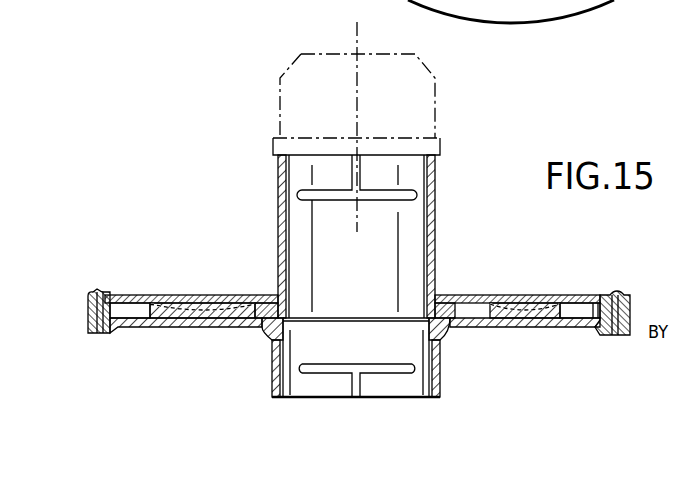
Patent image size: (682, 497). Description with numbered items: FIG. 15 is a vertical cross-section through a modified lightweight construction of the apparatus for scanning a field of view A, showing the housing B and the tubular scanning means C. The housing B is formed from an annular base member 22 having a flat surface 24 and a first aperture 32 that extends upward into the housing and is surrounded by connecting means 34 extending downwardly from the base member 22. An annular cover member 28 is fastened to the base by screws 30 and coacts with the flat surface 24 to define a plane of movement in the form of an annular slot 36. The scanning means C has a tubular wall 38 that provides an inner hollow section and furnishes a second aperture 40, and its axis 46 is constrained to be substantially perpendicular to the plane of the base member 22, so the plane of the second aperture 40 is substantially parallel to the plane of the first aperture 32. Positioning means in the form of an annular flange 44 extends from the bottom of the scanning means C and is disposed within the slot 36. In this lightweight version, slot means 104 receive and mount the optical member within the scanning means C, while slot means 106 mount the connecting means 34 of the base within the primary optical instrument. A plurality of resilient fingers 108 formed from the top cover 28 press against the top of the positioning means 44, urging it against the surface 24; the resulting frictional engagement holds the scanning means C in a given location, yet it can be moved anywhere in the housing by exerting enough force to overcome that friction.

The axis 46 is at (357, 45).
The wall 38 is at (438, 232).
The second aperture 40 is at (288, 262).
The slot means 104 is at (363, 170).
The cover member 28 is at (133, 296).
The resilient fingers 108 is at (176, 301).
The annular slot 36 is at (145, 314).
The flat surface 24 is at (567, 318).
The screws 30 is at (600, 292).
The base member 22 is at (178, 323).
The annular flange 44 is at (245, 319).
The connecting means 34 is at (443, 376).
The first aperture 32 is at (284, 356).
The slot means 106 is at (362, 385).
The apparatus for scanning a field of view A is at (272, 179).
The housing B is at (83, 312).
The scanning means C is at (280, 216).